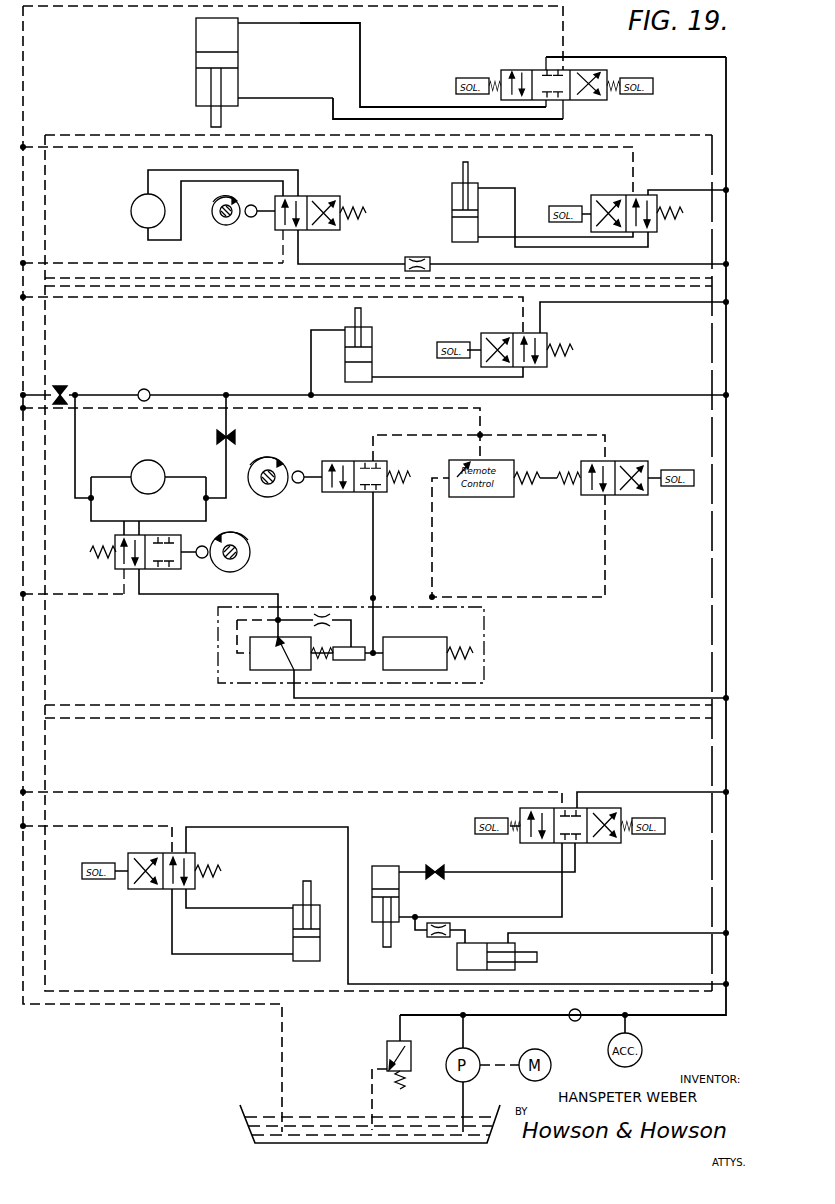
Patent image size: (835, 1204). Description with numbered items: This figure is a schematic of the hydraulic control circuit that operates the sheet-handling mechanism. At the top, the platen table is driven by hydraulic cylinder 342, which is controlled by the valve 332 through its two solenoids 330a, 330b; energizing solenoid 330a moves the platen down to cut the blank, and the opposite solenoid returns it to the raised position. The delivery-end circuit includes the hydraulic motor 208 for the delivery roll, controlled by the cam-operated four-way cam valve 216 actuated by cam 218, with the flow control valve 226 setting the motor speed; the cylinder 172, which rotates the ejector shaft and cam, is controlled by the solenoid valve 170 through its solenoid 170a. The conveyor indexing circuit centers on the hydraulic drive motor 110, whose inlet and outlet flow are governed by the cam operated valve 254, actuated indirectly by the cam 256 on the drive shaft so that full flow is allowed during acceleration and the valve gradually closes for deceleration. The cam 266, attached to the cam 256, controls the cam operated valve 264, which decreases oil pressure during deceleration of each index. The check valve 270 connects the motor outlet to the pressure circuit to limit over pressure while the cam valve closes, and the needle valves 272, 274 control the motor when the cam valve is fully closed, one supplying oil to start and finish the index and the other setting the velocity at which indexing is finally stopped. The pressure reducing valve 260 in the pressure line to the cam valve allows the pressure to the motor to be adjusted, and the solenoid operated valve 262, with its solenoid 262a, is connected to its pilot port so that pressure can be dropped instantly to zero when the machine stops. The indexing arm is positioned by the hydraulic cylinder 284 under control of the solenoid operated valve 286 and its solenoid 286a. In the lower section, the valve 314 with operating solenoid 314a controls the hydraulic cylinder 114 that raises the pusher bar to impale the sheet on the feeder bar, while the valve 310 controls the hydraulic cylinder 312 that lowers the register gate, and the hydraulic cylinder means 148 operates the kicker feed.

The hydraulic cylinder 342 is at (196, 32).
The valve 332 is at (587, 105).
The solenoid 330a is at (469, 78).
The solenoid 330b is at (655, 92).
The hydraulic motor 208 is at (135, 201).
The cam 218 is at (222, 226).
The cam valve 216 is at (319, 196).
The flow control valve 226 is at (413, 257).
The cylinder 172 is at (452, 209).
The solenoid valve 170 is at (655, 236).
The solenoid 170a is at (557, 206).
The needle valve 274 is at (63, 384).
The check valve 270 is at (148, 389).
The needle valve 272 is at (238, 436).
The hydraulic drive motor 110 is at (147, 460).
The cam operated valve 254 is at (115, 566).
The cam 256 is at (249, 556).
The cam 266 is at (275, 494).
The cam operated valve 264 is at (329, 461).
The hydraulic cylinder 284 is at (372, 371).
The solenoid operated valve 286 is at (556, 335).
The solenoid 286a is at (444, 342).
The solenoid operated valve 262 is at (637, 455).
The solenoid 262a is at (680, 486).
The pressure reducing valve 260 is at (490, 640).
The valve 314 is at (159, 897).
The operating solenoid 314a is at (84, 878).
The hydraulic cylinder 114 is at (296, 905).
The hydraulic cylinder 312 is at (385, 866).
The valve 310 is at (548, 845).
The hydraulic cylinder means 148 is at (517, 967).